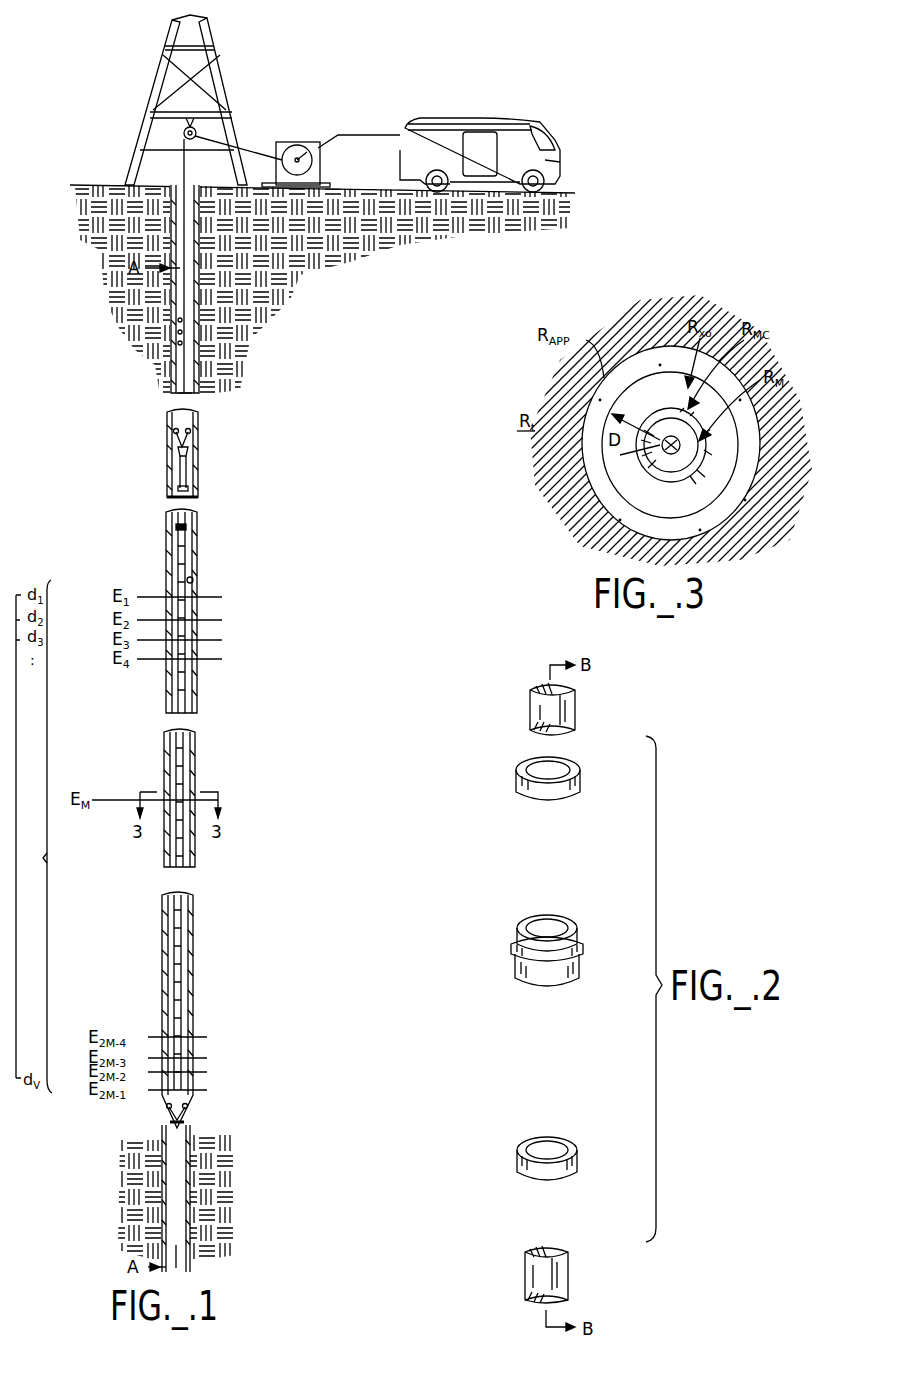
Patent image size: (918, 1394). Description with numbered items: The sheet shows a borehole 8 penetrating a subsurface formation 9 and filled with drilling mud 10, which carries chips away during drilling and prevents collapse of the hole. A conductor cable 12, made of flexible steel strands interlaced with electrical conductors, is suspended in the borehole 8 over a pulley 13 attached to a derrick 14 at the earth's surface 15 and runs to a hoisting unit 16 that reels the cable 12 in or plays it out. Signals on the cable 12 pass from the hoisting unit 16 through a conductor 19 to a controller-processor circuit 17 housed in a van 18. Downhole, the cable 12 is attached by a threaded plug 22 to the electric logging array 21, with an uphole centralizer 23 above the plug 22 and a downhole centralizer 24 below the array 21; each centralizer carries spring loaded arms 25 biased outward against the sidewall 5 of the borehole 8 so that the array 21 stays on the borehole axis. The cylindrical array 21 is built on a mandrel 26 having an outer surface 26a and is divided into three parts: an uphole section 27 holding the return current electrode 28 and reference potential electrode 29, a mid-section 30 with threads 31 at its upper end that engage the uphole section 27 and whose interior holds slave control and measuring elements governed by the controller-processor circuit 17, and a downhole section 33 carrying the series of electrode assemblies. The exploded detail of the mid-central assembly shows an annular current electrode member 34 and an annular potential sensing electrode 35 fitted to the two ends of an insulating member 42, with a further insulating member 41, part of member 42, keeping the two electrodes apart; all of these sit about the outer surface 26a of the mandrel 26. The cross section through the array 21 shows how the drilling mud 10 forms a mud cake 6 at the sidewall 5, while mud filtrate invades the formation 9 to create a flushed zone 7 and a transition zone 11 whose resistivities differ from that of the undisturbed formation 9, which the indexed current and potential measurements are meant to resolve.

In FIG. 1, the sidewall 5 is at (194, 576).
In FIG. 3, the sidewall 5 is at (660, 455).
In FIG. 3, the mud cake 6 is at (687, 477).
In FIG. 3, the flushed zone 7 is at (620, 455).
In FIG. 1, the borehole 8 is at (188, 373).
In FIG. 3, the borehole 8 is at (705, 463).
In FIG. 1, the subsurface formation 9 is at (350, 320).
In FIG. 3, the subsurface formation 9 is at (645, 294).
In FIG. 1, the drilling mud 10 is at (178, 333).
In FIG. 3, the drilling mud 10 is at (692, 453).
In FIG. 3, the transition zone 11 is at (612, 395).
In FIG. 1, the conductor cable 12 is at (186, 288).
In FIG. 1, the pulley 13 is at (184, 131).
In FIG. 1, the derrick 14 is at (228, 104).
In FIG. 1, the earth's surface 15 is at (106, 184).
In FIG. 1, the hoisting unit 16 is at (322, 170).
In FIG. 1, the controller-processor circuit 17 is at (478, 142).
In FIG. 1, the van 18 is at (530, 118).
In FIG. 1, the conductor 19 is at (367, 134).
In FIG. 1, the electric logging array 21 is at (206, 767).
In FIG. 3, the electric logging array 21 is at (668, 450).
In FIG. 1, the threaded plug 22 is at (182, 454).
In FIG. 1, the uphole centralizer 23 is at (190, 450).
In FIG. 1, the downhole centralizer 24 is at (195, 1131).
In FIG. 1, the spring loaded arms 25 is at (190, 436).
In FIG. 1, the mandrel 26 is at (188, 527).
In FIG. 2, the mandrel 26 is at (553, 717).
In FIG. 1, the outer surface 26a is at (196, 496).
In FIG. 2, the outer surface 26a is at (542, 712).
In FIG. 1, the uphole section 27 is at (108, 455).
In FIG. 1, the return current electrode 28 is at (190, 468).
In FIG. 1, the reference potential electrode 29 is at (190, 488).
In FIG. 1, the mid-section 30 is at (108, 530).
In FIG. 1, the threads 31 is at (186, 551).
In FIG. 1, the downhole section 33 is at (36, 836).
In FIG. 2, the current electrode member 34 is at (580, 770).
In FIG. 2, the potential sensing electrode 35 is at (578, 1150).
In FIG. 2, the insulating member 41 is at (584, 958).
In FIG. 2, the insulating member 42 is at (578, 930).